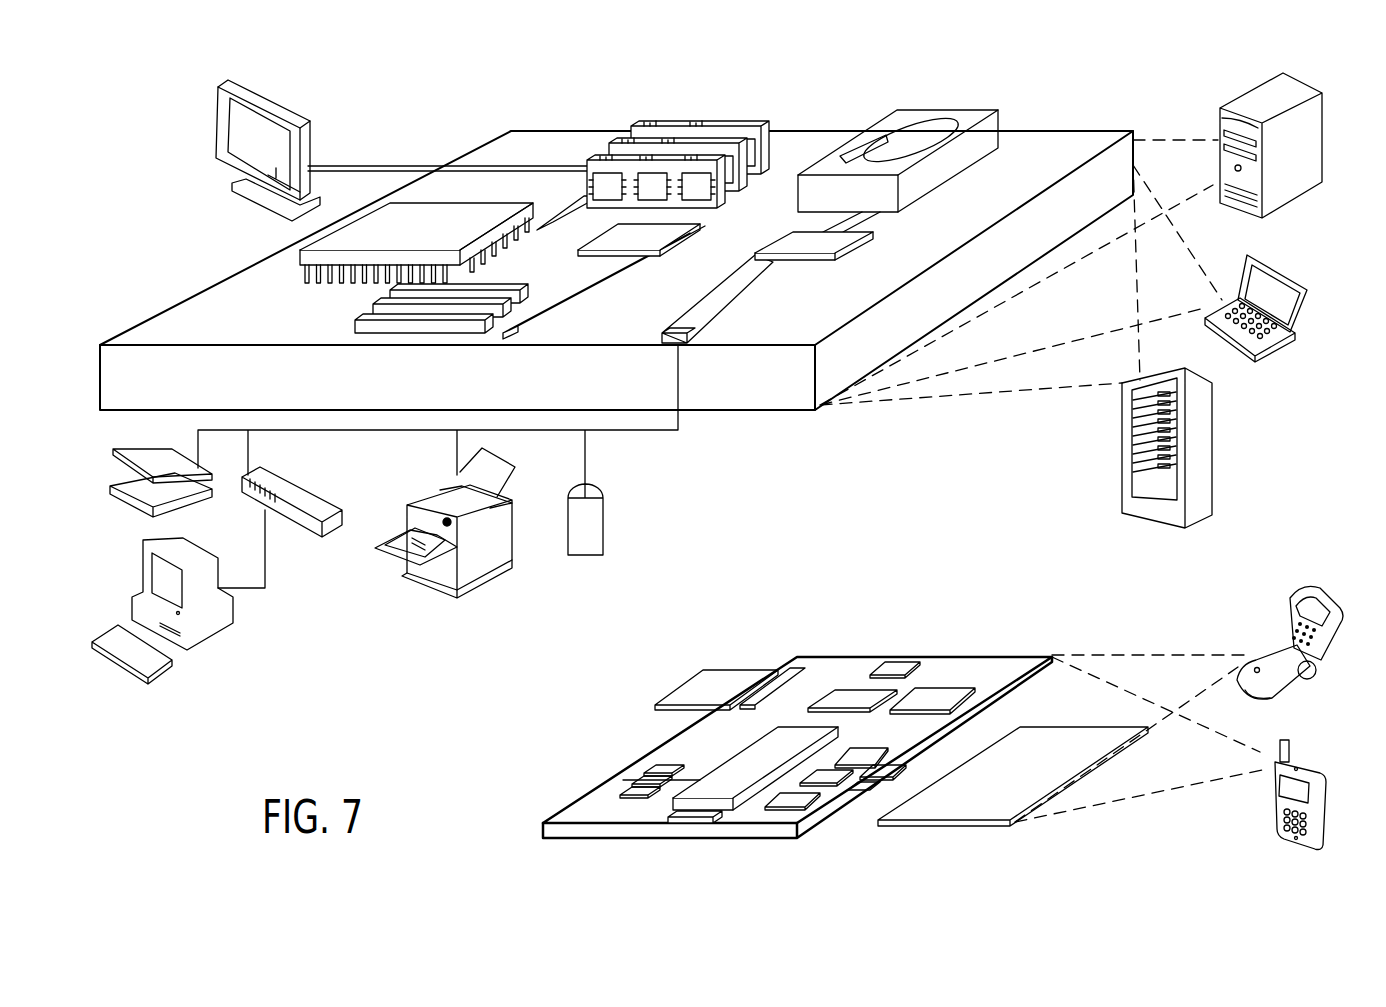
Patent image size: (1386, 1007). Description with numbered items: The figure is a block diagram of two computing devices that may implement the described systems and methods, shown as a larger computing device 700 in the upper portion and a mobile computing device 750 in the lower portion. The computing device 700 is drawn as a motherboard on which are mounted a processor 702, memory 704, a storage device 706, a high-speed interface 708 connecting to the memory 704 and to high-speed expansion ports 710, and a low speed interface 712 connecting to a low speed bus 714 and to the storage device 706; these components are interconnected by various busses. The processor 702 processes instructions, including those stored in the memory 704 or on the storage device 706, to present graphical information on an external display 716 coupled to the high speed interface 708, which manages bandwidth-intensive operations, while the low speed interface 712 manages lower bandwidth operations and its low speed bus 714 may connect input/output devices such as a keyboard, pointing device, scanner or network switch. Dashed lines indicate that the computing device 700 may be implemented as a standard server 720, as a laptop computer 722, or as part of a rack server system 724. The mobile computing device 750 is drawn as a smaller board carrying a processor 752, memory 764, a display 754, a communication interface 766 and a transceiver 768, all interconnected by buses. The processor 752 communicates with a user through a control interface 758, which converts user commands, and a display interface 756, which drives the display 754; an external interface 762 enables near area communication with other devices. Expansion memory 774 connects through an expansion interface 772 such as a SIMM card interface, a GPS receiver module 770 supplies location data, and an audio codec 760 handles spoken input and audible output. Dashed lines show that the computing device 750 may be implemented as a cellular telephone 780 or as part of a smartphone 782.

The computing device 700 is at (430, 98).
The processor 702 is at (263, 260).
The memory 704 is at (643, 122).
The storage device 706 is at (888, 114).
The high-speed interface 708 is at (608, 233).
The high-speed expansion ports 710 is at (388, 308).
The low speed interface 712 is at (817, 242).
The low speed bus 714 is at (687, 345).
The display 716 is at (218, 87).
The standard server 720 is at (1220, 118).
The laptop computer 722 is at (1250, 258).
The rack server system 724 is at (1125, 476).
The computing device 750 is at (764, 622).
The processor 752 is at (733, 811).
The display 754 is at (1012, 827).
The display interface 756 is at (852, 806).
The control interface 758 is at (848, 804).
The audio codec 760 is at (894, 778).
The external interface 762 is at (690, 826).
The memory 764 is at (623, 780).
The communication interface 766 is at (850, 694).
The transceiver 768 is at (932, 698).
The GPS receiver module 770 is at (907, 661).
The expansion interface 772 is at (776, 666).
The expansion memory 774 is at (680, 670).
The cellular telephone 780 is at (1300, 603).
The smartphone 782 is at (1283, 745).